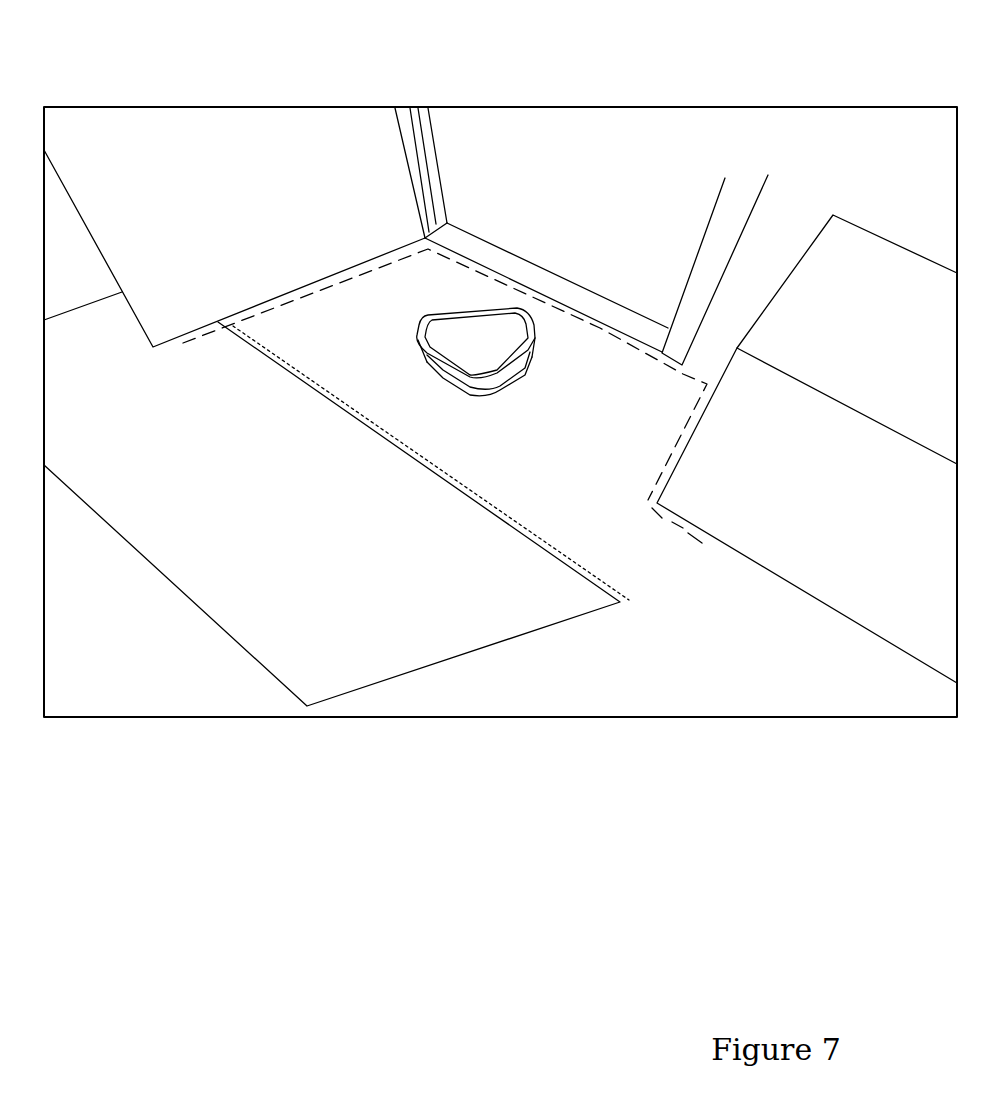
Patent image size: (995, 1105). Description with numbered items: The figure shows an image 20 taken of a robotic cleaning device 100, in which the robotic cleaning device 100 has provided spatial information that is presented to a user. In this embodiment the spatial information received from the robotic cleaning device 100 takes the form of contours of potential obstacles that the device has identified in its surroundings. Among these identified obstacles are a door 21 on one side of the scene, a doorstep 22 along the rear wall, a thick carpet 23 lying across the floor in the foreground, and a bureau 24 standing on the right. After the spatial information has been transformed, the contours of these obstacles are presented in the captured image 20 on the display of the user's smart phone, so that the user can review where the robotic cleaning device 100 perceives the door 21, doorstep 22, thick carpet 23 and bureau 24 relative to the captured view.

The image 20 is at (315, 98).
The door 21 is at (213, 212).
The doorstep 22 is at (581, 297).
The thick carpet 23 is at (225, 585).
The bureau 24 is at (678, 508).
The robotic cleaning device 100 is at (470, 323).